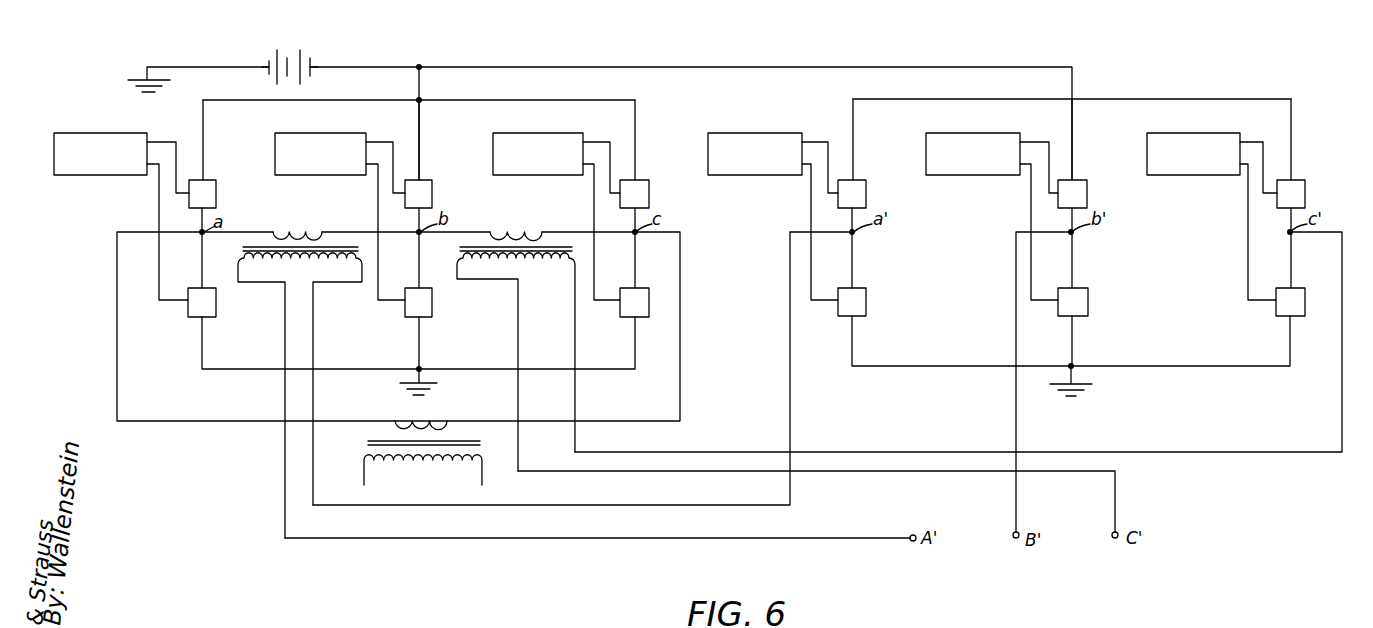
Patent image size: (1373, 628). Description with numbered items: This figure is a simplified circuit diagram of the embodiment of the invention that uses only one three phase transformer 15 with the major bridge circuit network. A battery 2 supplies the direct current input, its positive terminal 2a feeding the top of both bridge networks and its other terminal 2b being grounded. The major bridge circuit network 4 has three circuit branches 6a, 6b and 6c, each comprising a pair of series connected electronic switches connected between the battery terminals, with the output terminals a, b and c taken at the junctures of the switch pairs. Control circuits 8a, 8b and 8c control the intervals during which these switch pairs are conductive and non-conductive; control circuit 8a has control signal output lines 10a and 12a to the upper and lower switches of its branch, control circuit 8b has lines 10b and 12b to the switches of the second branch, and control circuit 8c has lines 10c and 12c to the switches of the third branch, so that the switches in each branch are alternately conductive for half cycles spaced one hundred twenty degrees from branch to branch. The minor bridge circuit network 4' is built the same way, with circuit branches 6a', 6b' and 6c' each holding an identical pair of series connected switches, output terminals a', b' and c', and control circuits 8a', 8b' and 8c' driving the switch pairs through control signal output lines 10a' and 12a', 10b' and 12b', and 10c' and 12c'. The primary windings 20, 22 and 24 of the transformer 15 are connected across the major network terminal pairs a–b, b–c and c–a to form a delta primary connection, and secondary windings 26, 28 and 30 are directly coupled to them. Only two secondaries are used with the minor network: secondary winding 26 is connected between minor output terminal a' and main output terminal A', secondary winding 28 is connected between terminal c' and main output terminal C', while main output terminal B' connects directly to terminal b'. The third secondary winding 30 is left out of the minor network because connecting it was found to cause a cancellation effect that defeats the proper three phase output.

The battery 2 is at (285, 35).
The positive battery terminal 2a is at (314, 64).
The grounded battery terminal 2b is at (268, 63).
The major bridge circuit network 4 is at (418, 203).
The minor bridge circuit network 4' is at (1071, 215).
The circuit branch 6a is at (224, 140).
The circuit branch 6b is at (442, 140).
The circuit branch 6c is at (654, 132).
The circuit branch 6a' is at (872, 139).
The circuit branch 6b' is at (1097, 139).
The circuit branch 6c' is at (1316, 139).
The control circuit 8a is at (100, 140).
The control circuit 8b is at (320, 140).
The control circuit 8c is at (538, 140).
The control circuit 8a' is at (755, 139).
The control circuit 8b' is at (973, 139).
The control circuit 8c' is at (1193, 139).
The control signal output line 10a is at (155, 149).
The control signal output line 10b is at (380, 149).
The control signal output line 10c is at (595, 149).
The control signal output line 10a' is at (811, 148).
The control signal output line 10b' is at (1034, 148).
The control signal output line 10c' is at (1254, 148).
The control signal output line 12a is at (140, 232).
The control signal output line 12b is at (364, 232).
The control signal output line 12c is at (578, 232).
The control signal output line 12a' is at (794, 232).
The control signal output line 12b' is at (1014, 232).
The control signal output line 12c' is at (1233, 232).
The three phase voltage step-up transformer 15 is at (285, 207).
The primary winding 20 is at (300, 232).
The primary winding 22 is at (520, 232).
The primary winding 24 is at (425, 430).
The secondary winding 26 is at (325, 268).
The secondary winding 28 is at (531, 268).
The secondary winding 30 is at (414, 458).